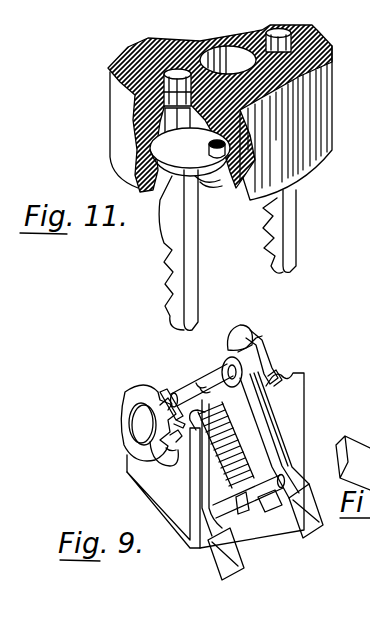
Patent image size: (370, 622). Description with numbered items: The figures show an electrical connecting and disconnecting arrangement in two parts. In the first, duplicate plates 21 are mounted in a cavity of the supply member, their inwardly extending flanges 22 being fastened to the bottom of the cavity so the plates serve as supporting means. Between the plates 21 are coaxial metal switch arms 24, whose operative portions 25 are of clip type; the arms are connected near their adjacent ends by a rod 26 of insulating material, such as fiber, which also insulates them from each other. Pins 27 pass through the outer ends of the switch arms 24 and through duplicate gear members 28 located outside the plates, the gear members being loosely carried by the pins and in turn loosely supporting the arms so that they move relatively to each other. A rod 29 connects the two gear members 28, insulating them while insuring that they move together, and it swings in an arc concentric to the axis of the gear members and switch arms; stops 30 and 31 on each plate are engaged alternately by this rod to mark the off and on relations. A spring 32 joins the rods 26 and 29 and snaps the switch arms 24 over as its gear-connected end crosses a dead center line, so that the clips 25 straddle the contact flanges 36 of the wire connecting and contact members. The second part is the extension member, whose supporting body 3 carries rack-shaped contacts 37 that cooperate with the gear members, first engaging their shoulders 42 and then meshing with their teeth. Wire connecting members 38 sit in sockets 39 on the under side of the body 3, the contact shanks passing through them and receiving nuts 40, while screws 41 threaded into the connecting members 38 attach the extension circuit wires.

In FIG. 11, the supporting body 3 is at (338, 105).
In FIG. 11, the nuts 40 is at (135, 100).
In FIG. 11, the wire connecting members 38 is at (190, 158).
In FIG. 11, the sockets 39 is at (243, 178).
In FIG. 11, the screws 41 is at (203, 184).
In FIG. 11, the contacts 37 is at (198, 260).
In FIG. 9, the plates 21 is at (285, 392).
In FIG. 9, the stops 30 is at (128, 447).
In FIG. 9, the pins 27 is at (124, 416).
In FIG. 9, the gear members 28 is at (247, 320).
In FIG. 9, the stops 31 is at (165, 392).
In FIG. 9, the rod 29 is at (222, 372).
In FIG. 9, the switch arms 24 is at (268, 442).
In FIG. 9, the spring 32 is at (250, 447).
In FIG. 9, the rod 26 is at (236, 512).
In FIG. 9, the flanges 22 is at (274, 512).
In FIG. 9, the operative portions 25 is at (314, 528).
In FIG. 9, the shoulders 42 is at (170, 458).
In FIG. 9, the flanges 36 is at (340, 485).